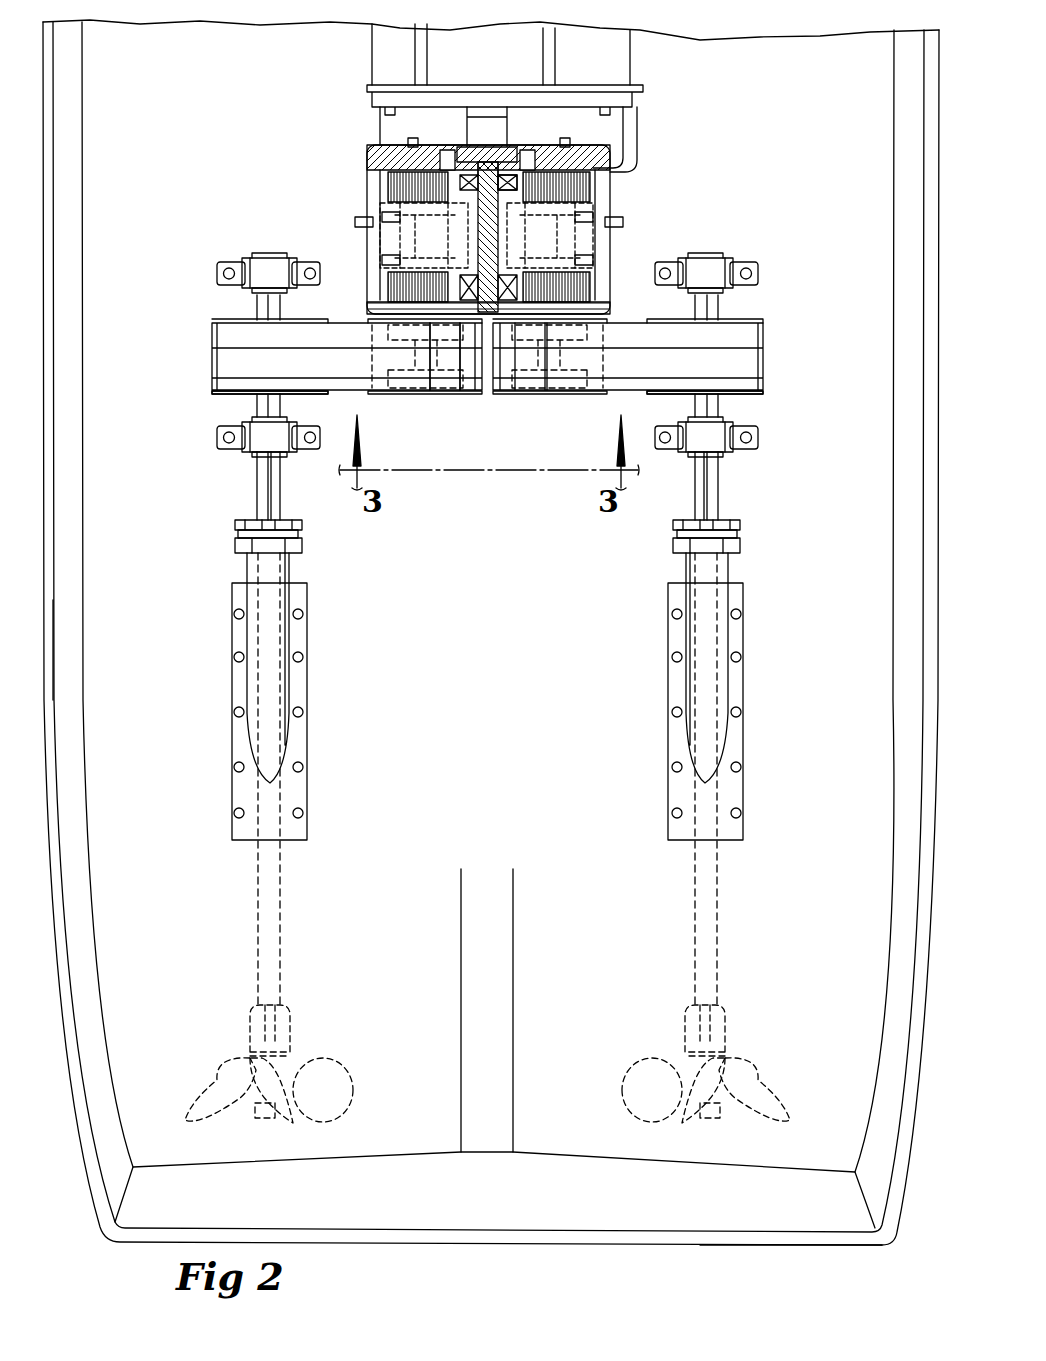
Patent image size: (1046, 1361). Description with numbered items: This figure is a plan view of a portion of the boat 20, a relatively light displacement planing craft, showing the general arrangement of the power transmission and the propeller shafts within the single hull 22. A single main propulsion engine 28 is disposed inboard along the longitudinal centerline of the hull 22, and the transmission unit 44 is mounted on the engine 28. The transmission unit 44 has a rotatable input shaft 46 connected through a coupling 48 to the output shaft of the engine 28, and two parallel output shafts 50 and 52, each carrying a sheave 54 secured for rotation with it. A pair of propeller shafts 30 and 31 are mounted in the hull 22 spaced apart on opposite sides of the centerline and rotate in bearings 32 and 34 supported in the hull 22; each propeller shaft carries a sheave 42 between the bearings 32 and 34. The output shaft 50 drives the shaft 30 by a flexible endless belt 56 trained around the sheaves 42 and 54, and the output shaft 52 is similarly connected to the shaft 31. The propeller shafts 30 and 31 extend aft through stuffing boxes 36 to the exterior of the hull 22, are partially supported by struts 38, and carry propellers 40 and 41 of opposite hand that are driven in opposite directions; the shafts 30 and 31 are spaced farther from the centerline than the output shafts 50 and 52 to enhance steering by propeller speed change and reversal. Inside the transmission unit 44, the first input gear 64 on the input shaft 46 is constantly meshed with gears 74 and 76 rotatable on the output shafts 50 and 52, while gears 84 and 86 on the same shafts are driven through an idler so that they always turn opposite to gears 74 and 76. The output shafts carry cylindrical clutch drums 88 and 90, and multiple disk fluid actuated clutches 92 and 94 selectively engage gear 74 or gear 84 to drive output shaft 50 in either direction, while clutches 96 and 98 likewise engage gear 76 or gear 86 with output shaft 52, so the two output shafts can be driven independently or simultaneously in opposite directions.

The boat 20 is at (738, 1252).
The hull 22 is at (54, 642).
The main propulsion engine 28 is at (382, 67).
The propeller shaft 30 is at (276, 480).
The propeller shaft 31 is at (712, 302).
The bearing 32 is at (252, 430).
The bearing 34 is at (252, 265).
The stuffing box 36 is at (288, 655).
The strut 38 is at (290, 1018).
The propeller 40 is at (342, 1073).
The propeller 41 is at (742, 1073).
The sheave 42 is at (300, 396).
The transmission unit 44 is at (633, 142).
The input shaft 46 is at (484, 180).
The coupling 48 is at (470, 150).
The output shaft 50 is at (438, 390).
The output shaft 52 is at (546, 390).
The sheave 54 is at (390, 390).
The flexible endless belt 56 is at (212, 352).
The first input gear 64 is at (520, 195).
The gear 74 is at (400, 190).
The gear 76 is at (583, 192).
The gear 84 is at (400, 287).
The gear 86 is at (580, 283).
The clutch drum 88 is at (440, 242).
The clutch drum 90 is at (568, 242).
The clutch assembly 92 is at (385, 215).
The clutch assembly 94 is at (385, 260).
The clutch 96 is at (590, 219).
The clutch 98 is at (590, 259).